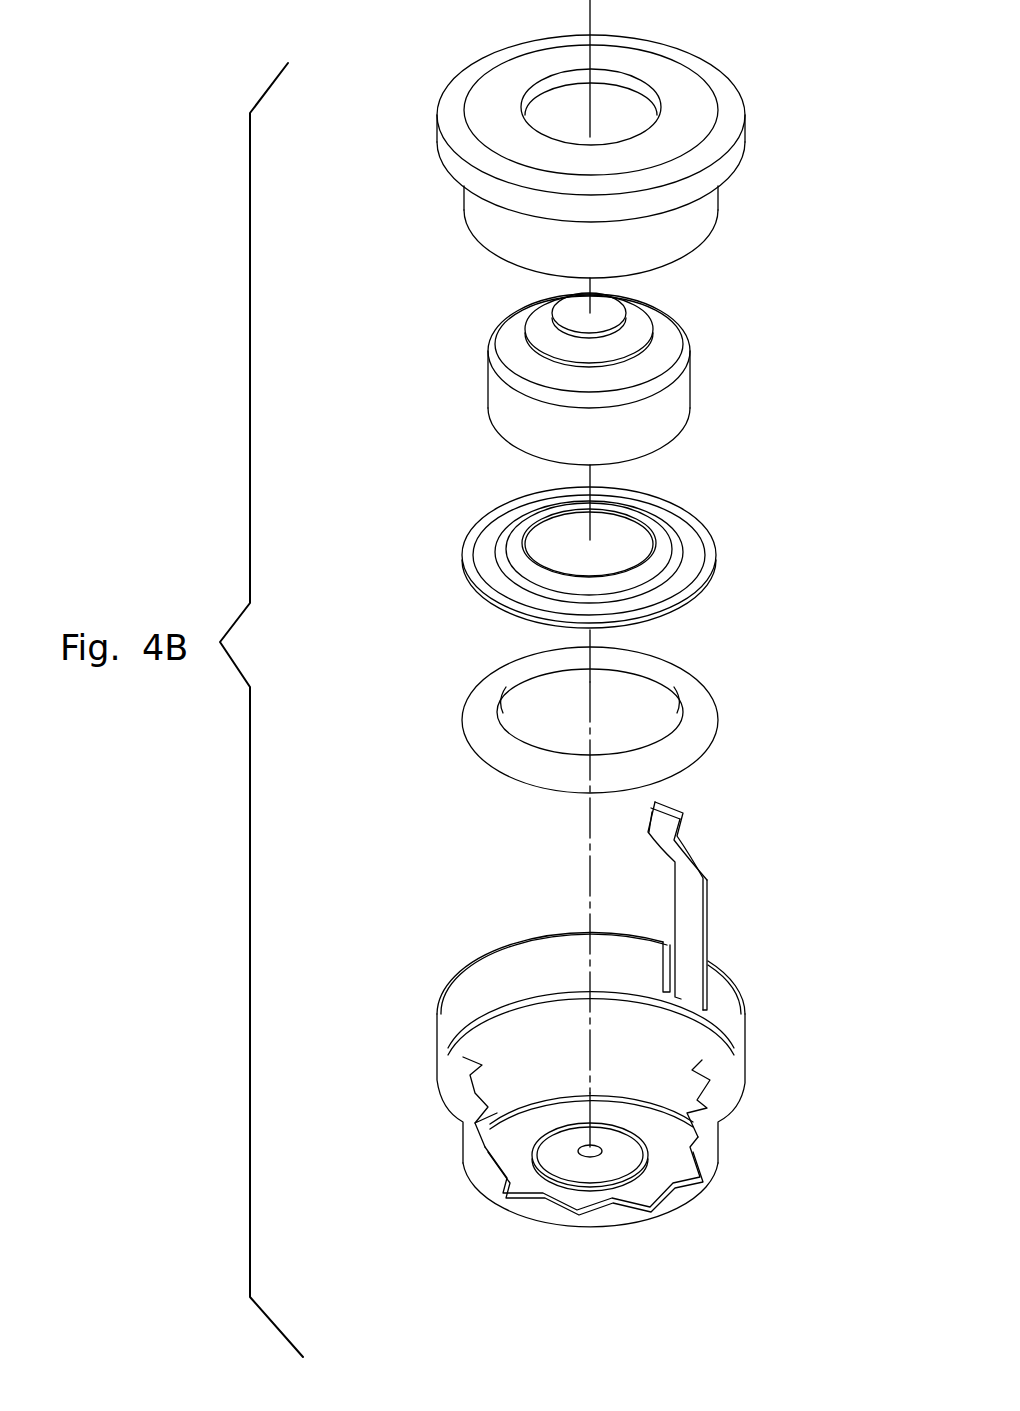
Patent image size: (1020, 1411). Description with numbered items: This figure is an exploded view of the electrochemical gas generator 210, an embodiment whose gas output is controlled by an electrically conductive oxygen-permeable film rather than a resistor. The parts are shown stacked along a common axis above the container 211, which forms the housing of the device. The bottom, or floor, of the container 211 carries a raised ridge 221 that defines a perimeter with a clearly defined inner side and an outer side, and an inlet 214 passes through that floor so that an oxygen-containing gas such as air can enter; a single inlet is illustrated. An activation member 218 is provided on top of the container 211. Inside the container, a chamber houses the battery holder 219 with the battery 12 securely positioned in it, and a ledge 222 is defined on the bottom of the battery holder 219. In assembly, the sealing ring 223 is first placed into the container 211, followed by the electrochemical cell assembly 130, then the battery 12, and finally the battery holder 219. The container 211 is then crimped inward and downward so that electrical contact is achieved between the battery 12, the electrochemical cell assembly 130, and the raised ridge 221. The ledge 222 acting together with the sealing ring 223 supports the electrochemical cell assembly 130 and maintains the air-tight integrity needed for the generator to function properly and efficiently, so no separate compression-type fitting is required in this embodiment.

The electrochemical gas generator 210 is at (398, 204).
The battery holder 219 is at (698, 212).
The ledge 222 is at (502, 253).
The battery 12 is at (667, 408).
The electrochemical cell assembly 130 is at (700, 570).
The sealing ring 223 is at (700, 705).
The activation member 218 is at (692, 913).
The container 211 is at (730, 1074).
The inlet 214 is at (590, 1147).
The raised ridge 221 is at (653, 1173).